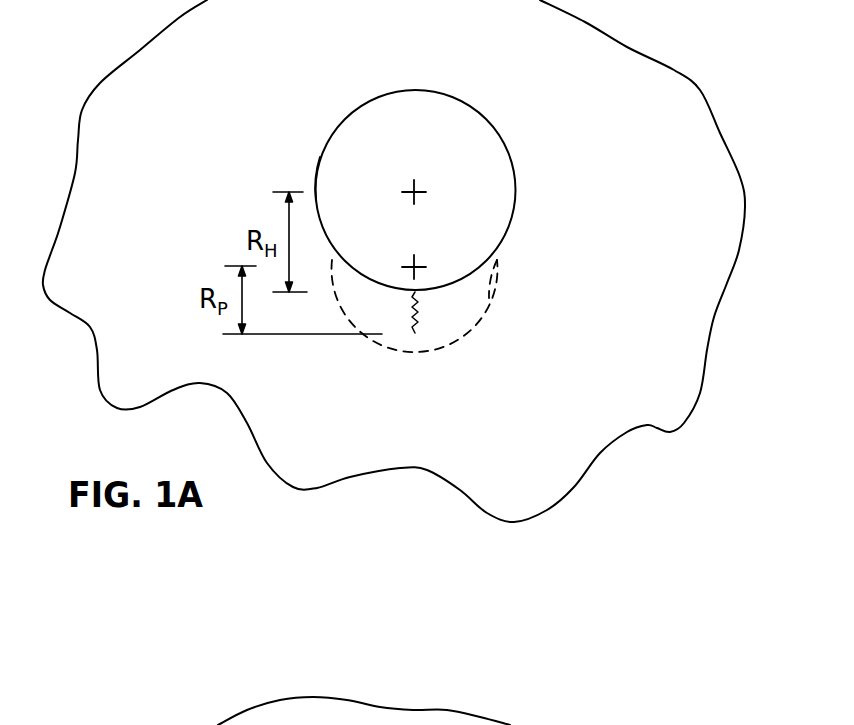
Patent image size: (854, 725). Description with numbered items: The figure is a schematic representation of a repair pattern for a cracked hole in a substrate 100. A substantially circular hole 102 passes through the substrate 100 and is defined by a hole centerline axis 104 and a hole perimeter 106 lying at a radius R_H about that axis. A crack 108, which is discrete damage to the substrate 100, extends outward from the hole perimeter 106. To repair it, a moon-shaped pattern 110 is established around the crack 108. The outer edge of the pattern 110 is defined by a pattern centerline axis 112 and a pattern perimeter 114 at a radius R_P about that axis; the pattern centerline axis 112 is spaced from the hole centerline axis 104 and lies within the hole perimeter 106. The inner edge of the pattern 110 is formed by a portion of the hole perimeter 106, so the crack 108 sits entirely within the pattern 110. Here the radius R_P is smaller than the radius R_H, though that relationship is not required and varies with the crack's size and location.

The substrate 100 is at (670, 88).
The hole 102 is at (518, 187).
The hole centerline axis 104 is at (414, 190).
The hole perimeter 106 is at (320, 157).
The crack 108 is at (415, 333).
The moon-shaped pattern 110 is at (472, 318).
The pattern centerline axis 112 is at (410, 262).
The pattern perimeter 114 is at (497, 262).